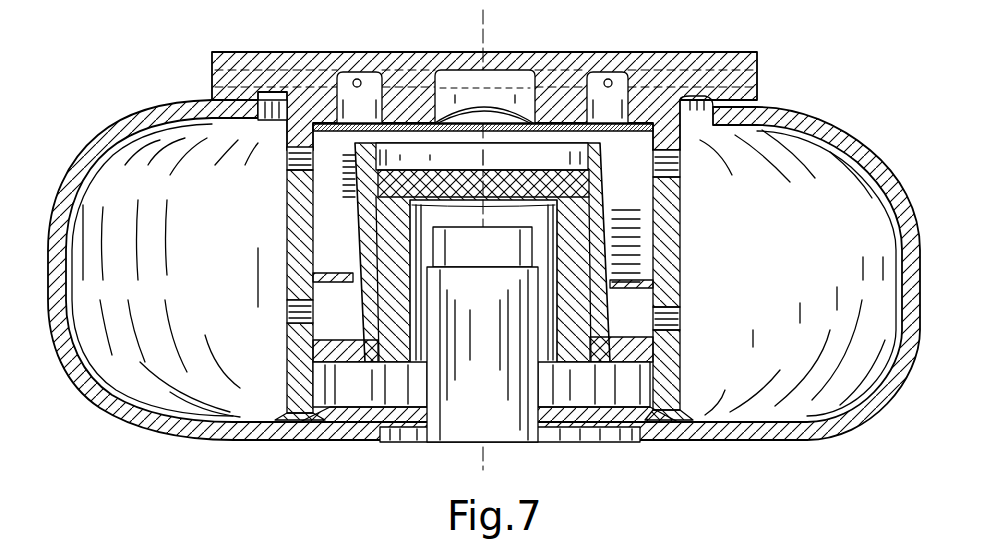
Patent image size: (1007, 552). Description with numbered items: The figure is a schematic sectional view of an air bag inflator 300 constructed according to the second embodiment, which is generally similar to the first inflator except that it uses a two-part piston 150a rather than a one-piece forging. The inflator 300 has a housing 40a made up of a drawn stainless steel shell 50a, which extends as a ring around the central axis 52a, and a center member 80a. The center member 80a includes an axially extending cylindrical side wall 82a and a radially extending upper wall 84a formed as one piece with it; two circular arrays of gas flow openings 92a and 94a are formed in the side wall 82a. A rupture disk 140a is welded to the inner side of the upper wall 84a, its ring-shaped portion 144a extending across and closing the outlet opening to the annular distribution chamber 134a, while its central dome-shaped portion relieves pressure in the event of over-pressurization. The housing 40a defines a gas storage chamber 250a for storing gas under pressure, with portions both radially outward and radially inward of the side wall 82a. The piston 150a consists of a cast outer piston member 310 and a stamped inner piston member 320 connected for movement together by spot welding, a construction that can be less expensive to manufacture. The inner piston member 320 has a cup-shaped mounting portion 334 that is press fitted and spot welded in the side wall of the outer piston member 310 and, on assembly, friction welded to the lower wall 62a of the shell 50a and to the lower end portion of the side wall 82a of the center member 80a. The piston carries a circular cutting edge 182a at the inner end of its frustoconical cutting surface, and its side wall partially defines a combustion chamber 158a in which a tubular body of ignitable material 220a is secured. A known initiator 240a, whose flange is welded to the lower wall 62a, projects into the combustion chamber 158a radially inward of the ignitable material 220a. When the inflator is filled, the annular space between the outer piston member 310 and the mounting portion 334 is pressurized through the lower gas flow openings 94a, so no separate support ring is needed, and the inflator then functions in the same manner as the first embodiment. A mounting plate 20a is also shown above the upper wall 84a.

The mounting plate 20a is at (210, 75).
The housing 40a is at (780, 102).
The shell 50a is at (727, 448).
The central axis 52a is at (483, 456).
The lower wall 62a is at (238, 436).
The center member 80a is at (287, 268).
The side wall 82a is at (287, 248).
The upper wall 84a is at (267, 52).
The gas flow openings 92a is at (680, 158).
The lower gas flow openings 94a is at (287, 312).
The distribution chamber 134a is at (612, 108).
The rupture disk 140a is at (507, 110).
The ring-shaped portion 144a is at (371, 122).
The two-part piston 150a is at (608, 232).
The combustion chamber 158a is at (480, 213).
The cutting edge 182a is at (398, 143).
The body of ignitable material 220a is at (572, 365).
The initiator 240a is at (420, 440).
The gas storage chamber 250a is at (835, 270).
The air bag inflator 300 is at (187, 470).
The outer piston member 310 is at (608, 258).
The inner piston member 320 is at (627, 350).
The mounting portion 334 is at (622, 408).